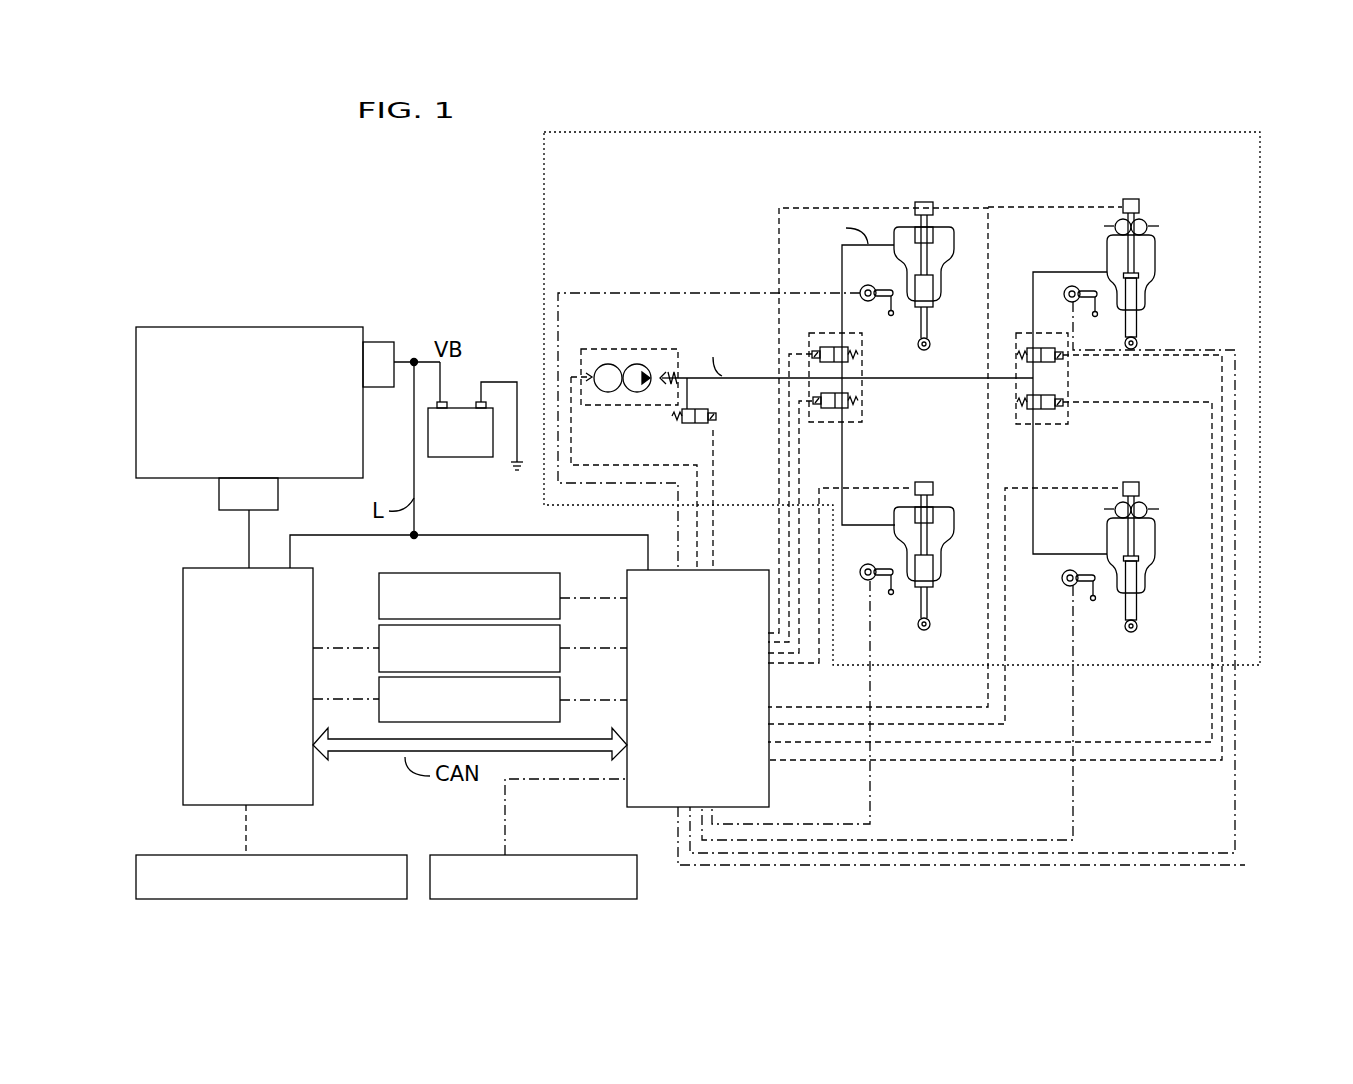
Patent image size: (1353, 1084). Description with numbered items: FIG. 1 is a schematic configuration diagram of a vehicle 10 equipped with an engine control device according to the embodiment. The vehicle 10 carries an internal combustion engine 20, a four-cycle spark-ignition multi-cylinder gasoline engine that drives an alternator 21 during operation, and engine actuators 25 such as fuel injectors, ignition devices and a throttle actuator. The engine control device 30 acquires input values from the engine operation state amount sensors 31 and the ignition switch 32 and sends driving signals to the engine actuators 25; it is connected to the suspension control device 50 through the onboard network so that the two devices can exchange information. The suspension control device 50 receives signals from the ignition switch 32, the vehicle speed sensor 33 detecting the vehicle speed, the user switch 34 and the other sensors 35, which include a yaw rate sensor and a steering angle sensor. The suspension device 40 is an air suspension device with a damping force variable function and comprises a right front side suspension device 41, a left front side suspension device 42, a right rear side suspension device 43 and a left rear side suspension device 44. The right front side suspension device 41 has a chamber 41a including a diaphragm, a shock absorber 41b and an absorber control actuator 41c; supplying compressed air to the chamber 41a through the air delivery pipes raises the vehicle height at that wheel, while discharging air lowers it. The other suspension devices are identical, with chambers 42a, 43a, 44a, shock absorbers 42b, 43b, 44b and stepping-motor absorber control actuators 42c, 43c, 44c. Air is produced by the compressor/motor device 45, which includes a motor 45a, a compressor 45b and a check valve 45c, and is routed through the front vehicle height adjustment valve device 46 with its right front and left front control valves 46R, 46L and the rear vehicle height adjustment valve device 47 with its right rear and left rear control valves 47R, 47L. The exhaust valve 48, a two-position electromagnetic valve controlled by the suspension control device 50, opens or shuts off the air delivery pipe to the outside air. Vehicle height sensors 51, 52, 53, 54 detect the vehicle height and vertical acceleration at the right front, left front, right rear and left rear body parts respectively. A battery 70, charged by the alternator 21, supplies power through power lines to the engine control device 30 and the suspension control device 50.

The vehicle 10 is at (271, 185).
The internal combustion engine 20 is at (270, 327).
The alternator 21 is at (379, 343).
The engine actuators 25 is at (278, 494).
The engine control device 30 is at (290, 806).
The engine operation state amount sensors 31 is at (196, 854).
The ignition switch 32 is at (562, 694).
The vehicle speed sensor 33 is at (562, 642).
The user switch 34 is at (562, 590).
The other sensors 35 is at (458, 853).
The suspension device 40 is at (1022, 132).
The right front side suspension device 41 is at (952, 185).
The chamber 41a is at (951, 275).
The shock absorber 41b is at (930, 321).
The absorber control actuator 41c is at (920, 203).
The left front side suspension device 42 is at (950, 465).
The chamber 42a is at (950, 549).
The shock absorber 42b is at (935, 598).
The absorber control actuator 42c is at (920, 483).
The right rear side suspension device 43 is at (1144, 190).
The chamber 43a is at (1155, 273).
The shock absorber 43b is at (1137, 326).
The absorber control actuator 43c is at (1126, 200).
The left rear side suspension device 44 is at (1152, 465).
The chamber 44a is at (1156, 563).
The shock absorber 44b is at (1140, 613).
The absorber control actuator 44c is at (1126, 482).
The compressor/motor device 45 is at (628, 414).
The motor 45a is at (604, 363).
The compressor 45b is at (637, 363).
The check valve 45c is at (668, 370).
The front vehicle height adjustment valve device 46 is at (878, 392).
The right front side control valve 46R is at (830, 347).
The left front side control valve 46L is at (833, 410).
The rear vehicle height adjustment valve device 47 is at (1078, 379).
The right rear side control valve 47R is at (1028, 348).
The left rear side control valve 47L is at (1030, 411).
The exhaust valve 48 is at (697, 428).
The suspension control device 50 is at (633, 808).
The vehicle height sensor 51 is at (872, 303).
The vehicle height sensor 52 is at (876, 590).
The vehicle height sensor 53 is at (1076, 304).
The vehicle height sensor 54 is at (1076, 589).
The battery 70 is at (459, 458).